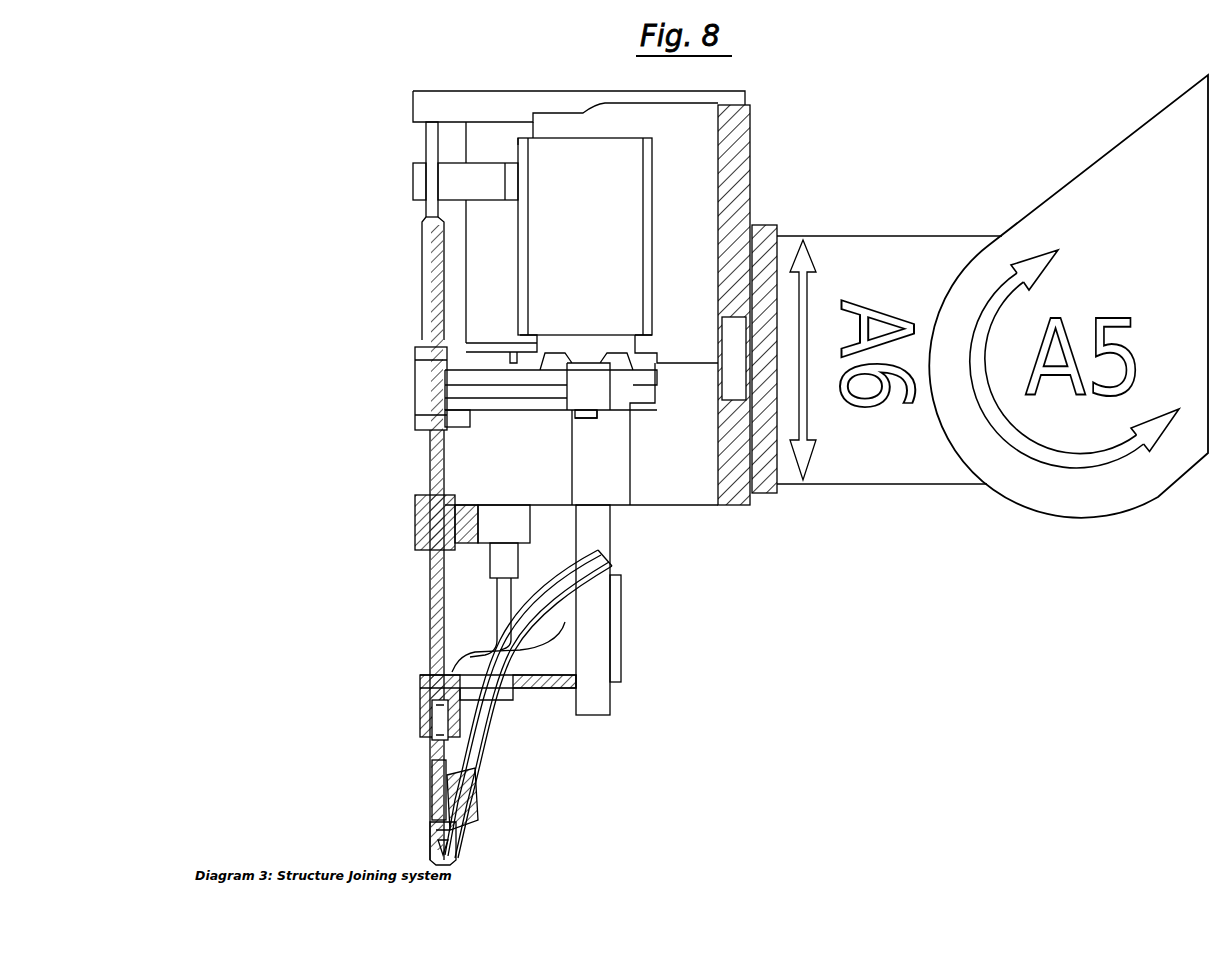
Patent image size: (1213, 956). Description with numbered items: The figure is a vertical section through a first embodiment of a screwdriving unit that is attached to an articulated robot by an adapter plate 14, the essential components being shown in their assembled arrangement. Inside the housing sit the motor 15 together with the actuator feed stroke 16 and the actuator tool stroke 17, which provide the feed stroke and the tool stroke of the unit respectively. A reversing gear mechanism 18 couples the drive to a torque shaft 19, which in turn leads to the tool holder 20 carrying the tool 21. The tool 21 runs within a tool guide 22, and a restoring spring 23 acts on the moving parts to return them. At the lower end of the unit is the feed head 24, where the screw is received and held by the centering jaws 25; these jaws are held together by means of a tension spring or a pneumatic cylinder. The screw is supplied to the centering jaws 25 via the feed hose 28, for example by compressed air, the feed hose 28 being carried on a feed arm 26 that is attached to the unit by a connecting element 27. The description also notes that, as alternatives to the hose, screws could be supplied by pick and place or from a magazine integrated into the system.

The adapter plate 14 is at (752, 186).
The motor 15 is at (652, 160).
The actuator feed stroke 16 is at (463, 140).
The actuator tool stroke 17 is at (468, 272).
The reversing gear mechanism 18 is at (492, 373).
The torque shaft 19 is at (440, 440).
The tool holder 20 is at (430, 507).
The tool 21 is at (428, 603).
The tool guide 22 is at (432, 690).
The restoring spring 23 is at (440, 718).
The feed head 24 is at (428, 803).
The centering jaw 25 is at (435, 851).
The feed arm 26 is at (480, 787).
The connecting element 27 is at (470, 745).
The feed hose 28 is at (567, 618).